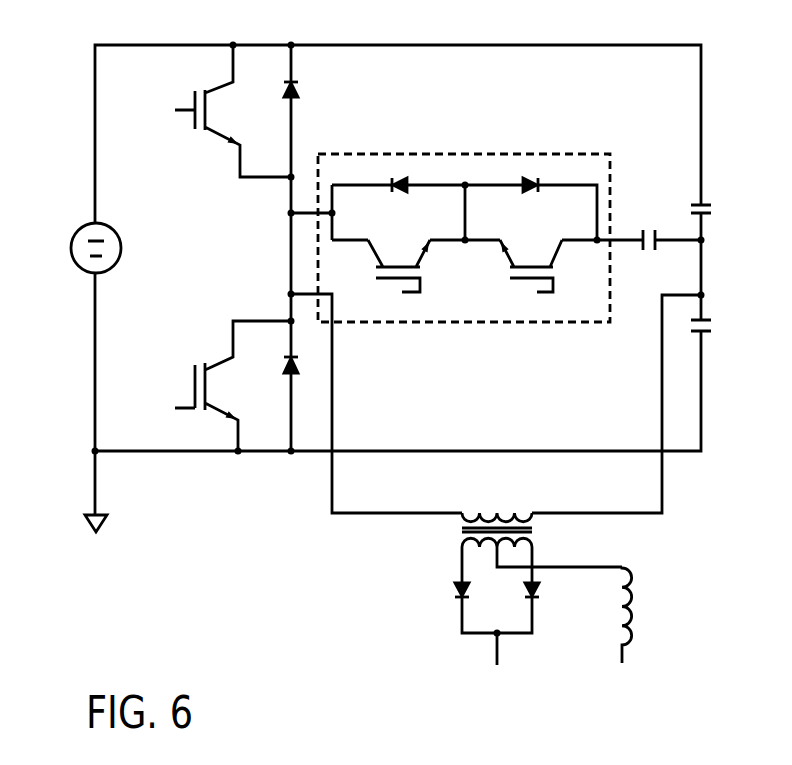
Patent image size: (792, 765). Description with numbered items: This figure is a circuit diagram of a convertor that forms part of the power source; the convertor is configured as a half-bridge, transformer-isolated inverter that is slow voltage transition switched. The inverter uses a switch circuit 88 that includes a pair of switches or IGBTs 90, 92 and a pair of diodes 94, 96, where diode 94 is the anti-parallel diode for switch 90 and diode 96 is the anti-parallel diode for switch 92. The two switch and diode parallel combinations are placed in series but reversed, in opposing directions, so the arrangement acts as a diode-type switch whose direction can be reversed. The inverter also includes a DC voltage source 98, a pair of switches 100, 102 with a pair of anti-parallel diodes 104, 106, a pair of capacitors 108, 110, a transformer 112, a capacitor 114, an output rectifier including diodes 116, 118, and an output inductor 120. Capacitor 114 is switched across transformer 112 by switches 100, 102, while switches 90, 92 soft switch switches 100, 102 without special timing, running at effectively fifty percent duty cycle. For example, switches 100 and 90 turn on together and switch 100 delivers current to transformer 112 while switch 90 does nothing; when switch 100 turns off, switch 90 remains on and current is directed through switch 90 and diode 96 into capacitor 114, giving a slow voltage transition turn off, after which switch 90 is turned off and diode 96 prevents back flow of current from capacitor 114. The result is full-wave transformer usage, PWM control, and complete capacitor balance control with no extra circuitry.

The switch circuit 88 is at (368, 152).
The switch 90 is at (402, 292).
The switch 92 is at (537, 292).
The diode 94 is at (406, 182).
The diode 96 is at (527, 182).
The DC voltage source 98 is at (78, 233).
The switch 100 is at (178, 108).
The switch 102 is at (193, 383).
The anti-parallel diode 104 is at (298, 93).
The anti-parallel diode 106 is at (286, 369).
The capacitor 108 is at (706, 201).
The capacitor 110 is at (706, 333).
The transformer 112 is at (533, 514).
The capacitor 114 is at (643, 231).
The diode 116 is at (455, 589).
The diode 118 is at (540, 590).
The output inductor 120 is at (633, 617).